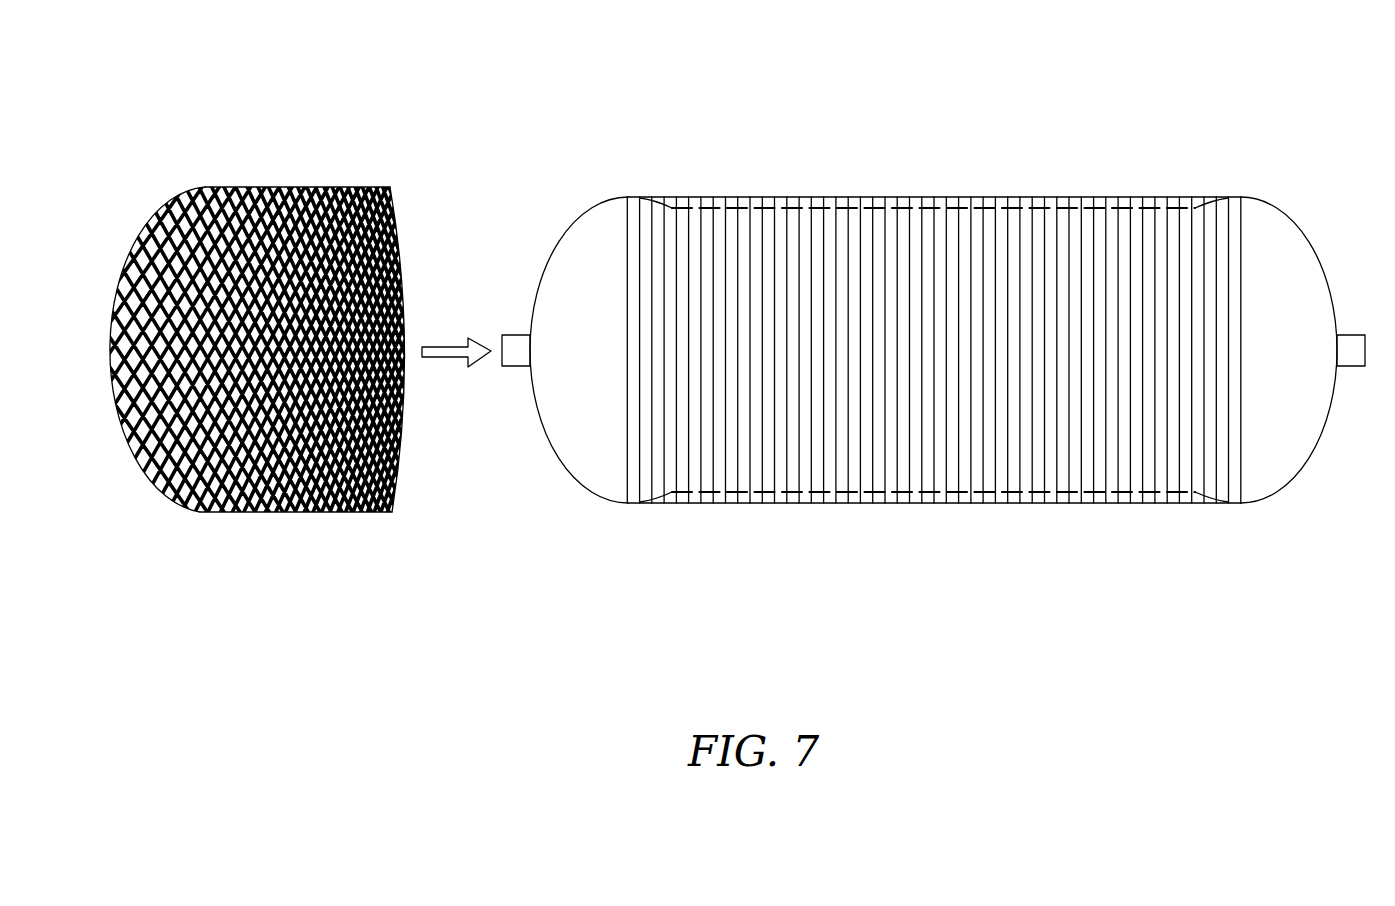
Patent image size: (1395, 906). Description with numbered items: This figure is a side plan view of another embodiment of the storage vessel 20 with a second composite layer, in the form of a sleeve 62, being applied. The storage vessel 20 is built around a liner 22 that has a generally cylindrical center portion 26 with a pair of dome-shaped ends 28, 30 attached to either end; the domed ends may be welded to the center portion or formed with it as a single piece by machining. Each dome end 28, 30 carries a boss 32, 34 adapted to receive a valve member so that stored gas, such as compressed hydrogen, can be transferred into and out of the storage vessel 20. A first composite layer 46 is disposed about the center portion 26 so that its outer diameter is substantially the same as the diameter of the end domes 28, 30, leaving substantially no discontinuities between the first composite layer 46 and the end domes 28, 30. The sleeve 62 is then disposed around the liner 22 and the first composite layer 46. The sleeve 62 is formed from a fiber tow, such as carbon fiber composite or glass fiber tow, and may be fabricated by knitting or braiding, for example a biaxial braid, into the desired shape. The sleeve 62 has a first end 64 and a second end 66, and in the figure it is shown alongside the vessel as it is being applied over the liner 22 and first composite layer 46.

The storage vessel 20 is at (483, 133).
The liner 22 is at (620, 475).
The center portion 26 is at (1012, 492).
The dome-shaped end 28 is at (1258, 197).
The dome-shaped end 30 is at (600, 197).
The boss 32 is at (1340, 334).
The boss 34 is at (517, 334).
The first composite layer 46 is at (958, 208).
The sleeve 62 is at (272, 513).
The first end 64 is at (402, 458).
The second end 66 is at (130, 455).